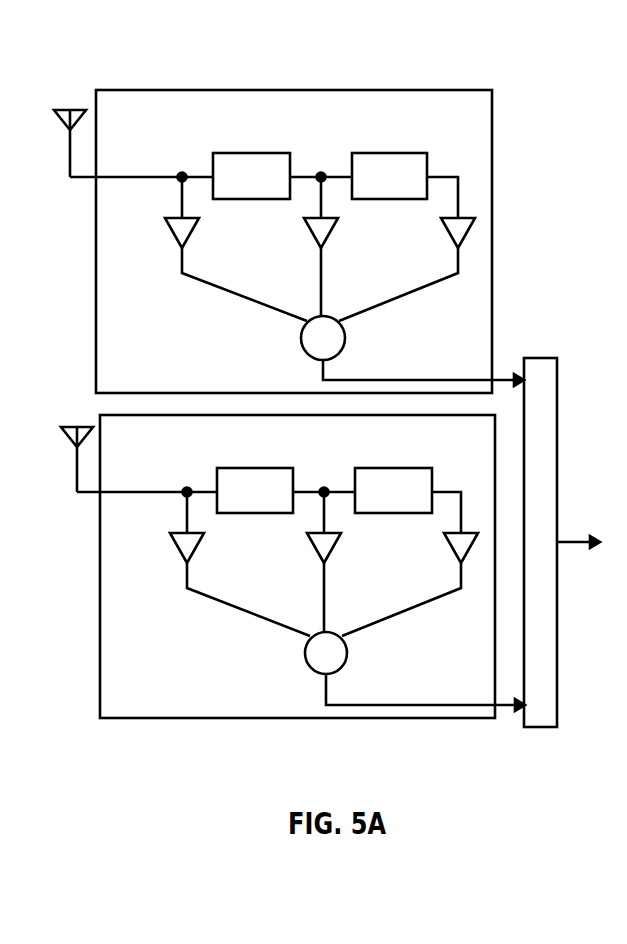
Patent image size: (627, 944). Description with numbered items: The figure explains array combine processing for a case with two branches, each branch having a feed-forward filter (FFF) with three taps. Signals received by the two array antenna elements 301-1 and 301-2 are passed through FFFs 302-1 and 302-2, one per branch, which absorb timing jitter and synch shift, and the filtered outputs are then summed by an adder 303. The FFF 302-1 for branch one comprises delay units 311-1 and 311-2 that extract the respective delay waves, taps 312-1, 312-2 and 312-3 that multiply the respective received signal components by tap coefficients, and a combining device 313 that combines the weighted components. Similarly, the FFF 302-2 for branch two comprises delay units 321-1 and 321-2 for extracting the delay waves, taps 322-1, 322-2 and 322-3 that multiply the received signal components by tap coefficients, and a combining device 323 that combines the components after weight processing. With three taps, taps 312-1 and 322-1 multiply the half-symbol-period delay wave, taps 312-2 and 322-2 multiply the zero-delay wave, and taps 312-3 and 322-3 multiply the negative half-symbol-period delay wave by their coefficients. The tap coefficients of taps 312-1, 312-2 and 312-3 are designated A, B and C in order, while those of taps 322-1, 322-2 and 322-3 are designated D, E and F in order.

The array antenna element 301-1 is at (80, 106).
The array antenna element 301-2 is at (86, 424).
The FFF 302-1 is at (96, 292).
The FFF 302-2 is at (100, 608).
The adder 303 is at (536, 358).
The delay unit 311-1 is at (283, 138).
The delay unit 311-2 is at (420, 138).
The tap 312-1 is at (175, 238).
The tap 312-2 is at (313, 238).
The tap 312-3 is at (450, 238).
The combining device 313 is at (345, 340).
The delay unit 321-1 is at (288, 453).
The delay unit 321-2 is at (425, 453).
The tap 322-1 is at (180, 553).
The tap 322-2 is at (316, 553).
The tap 322-3 is at (453, 553).
The combining device 323 is at (347, 655).